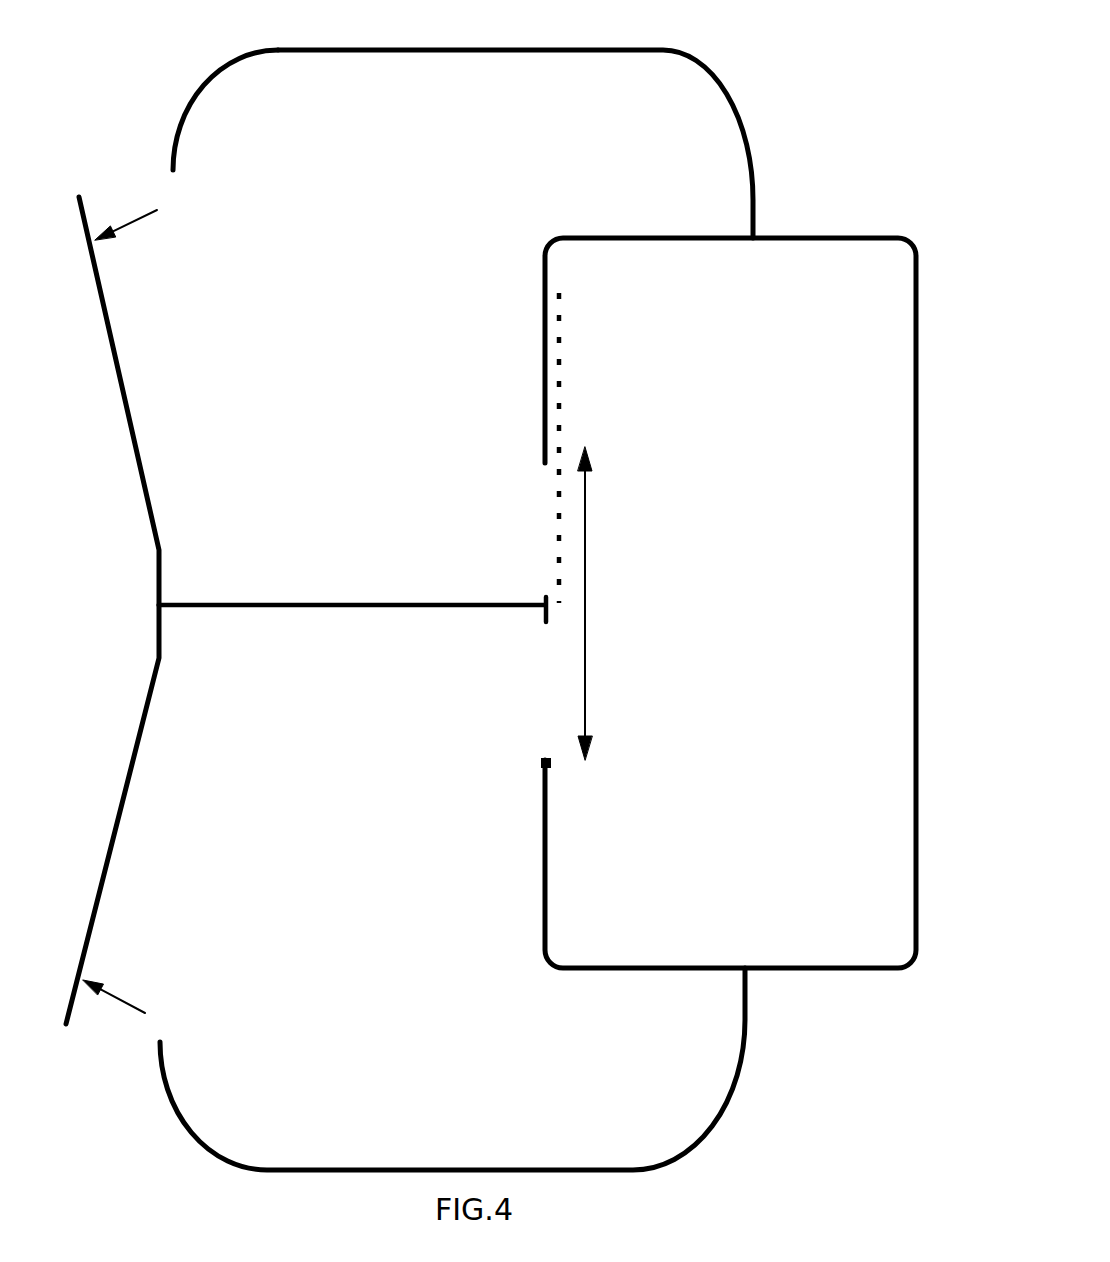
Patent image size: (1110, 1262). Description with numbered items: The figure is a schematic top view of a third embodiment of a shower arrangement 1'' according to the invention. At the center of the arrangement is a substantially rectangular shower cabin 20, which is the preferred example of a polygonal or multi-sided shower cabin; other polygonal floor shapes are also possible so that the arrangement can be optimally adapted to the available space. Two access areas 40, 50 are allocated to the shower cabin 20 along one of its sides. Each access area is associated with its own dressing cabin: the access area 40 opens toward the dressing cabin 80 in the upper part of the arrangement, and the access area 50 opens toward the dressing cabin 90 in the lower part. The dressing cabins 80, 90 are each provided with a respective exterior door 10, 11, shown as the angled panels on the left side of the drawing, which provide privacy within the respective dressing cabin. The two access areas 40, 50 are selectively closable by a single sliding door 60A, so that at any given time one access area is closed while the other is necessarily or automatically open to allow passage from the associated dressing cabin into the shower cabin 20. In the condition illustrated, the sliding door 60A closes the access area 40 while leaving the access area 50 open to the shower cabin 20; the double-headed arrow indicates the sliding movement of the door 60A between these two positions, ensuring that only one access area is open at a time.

The shower arrangement 1'' is at (488, 593).
The exterior door 10 is at (135, 458).
The exterior door 11 is at (115, 817).
The shower cabin 20 is at (812, 582).
The access area 40 is at (547, 510).
The access area 50 is at (548, 730).
The sliding door 60A is at (560, 320).
The dressing cabin 80 is at (318, 236).
The dressing cabin 90 is at (352, 928).